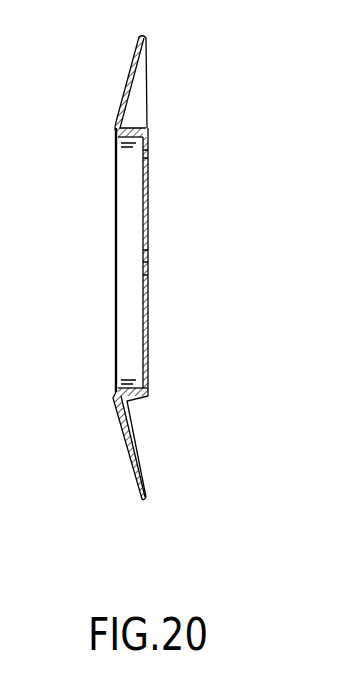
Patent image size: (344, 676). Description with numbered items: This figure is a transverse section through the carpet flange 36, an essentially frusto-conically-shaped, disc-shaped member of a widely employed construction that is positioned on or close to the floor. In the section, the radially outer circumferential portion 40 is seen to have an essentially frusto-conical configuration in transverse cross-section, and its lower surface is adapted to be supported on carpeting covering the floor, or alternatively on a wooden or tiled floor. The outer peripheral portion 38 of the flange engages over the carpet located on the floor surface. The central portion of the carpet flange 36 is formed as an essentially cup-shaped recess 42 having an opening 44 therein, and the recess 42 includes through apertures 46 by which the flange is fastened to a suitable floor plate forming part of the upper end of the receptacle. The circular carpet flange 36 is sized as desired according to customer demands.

The carpet flange 36 is at (146, 94).
The outer peripheral portion 38 is at (142, 424).
The radially outer circumferential portion 40 is at (127, 80).
The cup-shaped recess 42 is at (150, 203).
The opening 44 is at (145, 265).
The through apertures 46 is at (150, 160).